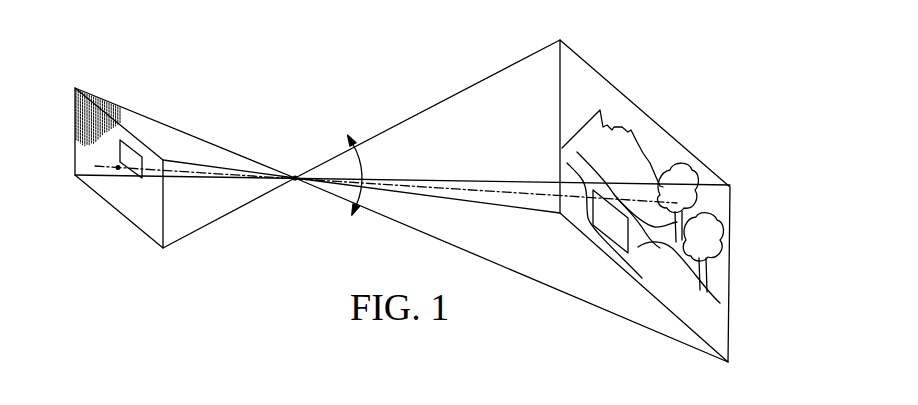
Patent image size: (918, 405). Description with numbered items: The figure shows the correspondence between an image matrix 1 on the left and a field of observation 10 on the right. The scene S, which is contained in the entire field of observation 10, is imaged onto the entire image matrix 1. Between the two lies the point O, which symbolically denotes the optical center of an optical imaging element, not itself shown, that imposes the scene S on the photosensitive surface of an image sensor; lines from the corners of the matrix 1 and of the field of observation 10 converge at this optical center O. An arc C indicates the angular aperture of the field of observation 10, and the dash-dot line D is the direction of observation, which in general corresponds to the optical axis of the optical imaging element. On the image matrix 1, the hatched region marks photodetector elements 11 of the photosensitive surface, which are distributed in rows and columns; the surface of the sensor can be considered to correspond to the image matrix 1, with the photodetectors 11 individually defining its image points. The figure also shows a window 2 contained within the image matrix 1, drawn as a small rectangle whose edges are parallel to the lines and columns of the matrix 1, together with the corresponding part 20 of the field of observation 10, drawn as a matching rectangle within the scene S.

The image matrix 1 is at (97, 193).
The window 2 is at (132, 148).
The field of observation 10 is at (625, 94).
The photodetector elements 11 is at (92, 107).
The part of the field of observation 20 is at (605, 235).
The optical center O is at (293, 175).
The angular aperture C is at (364, 167).
The direction of observation D is at (490, 190).
The scene S is at (633, 176).